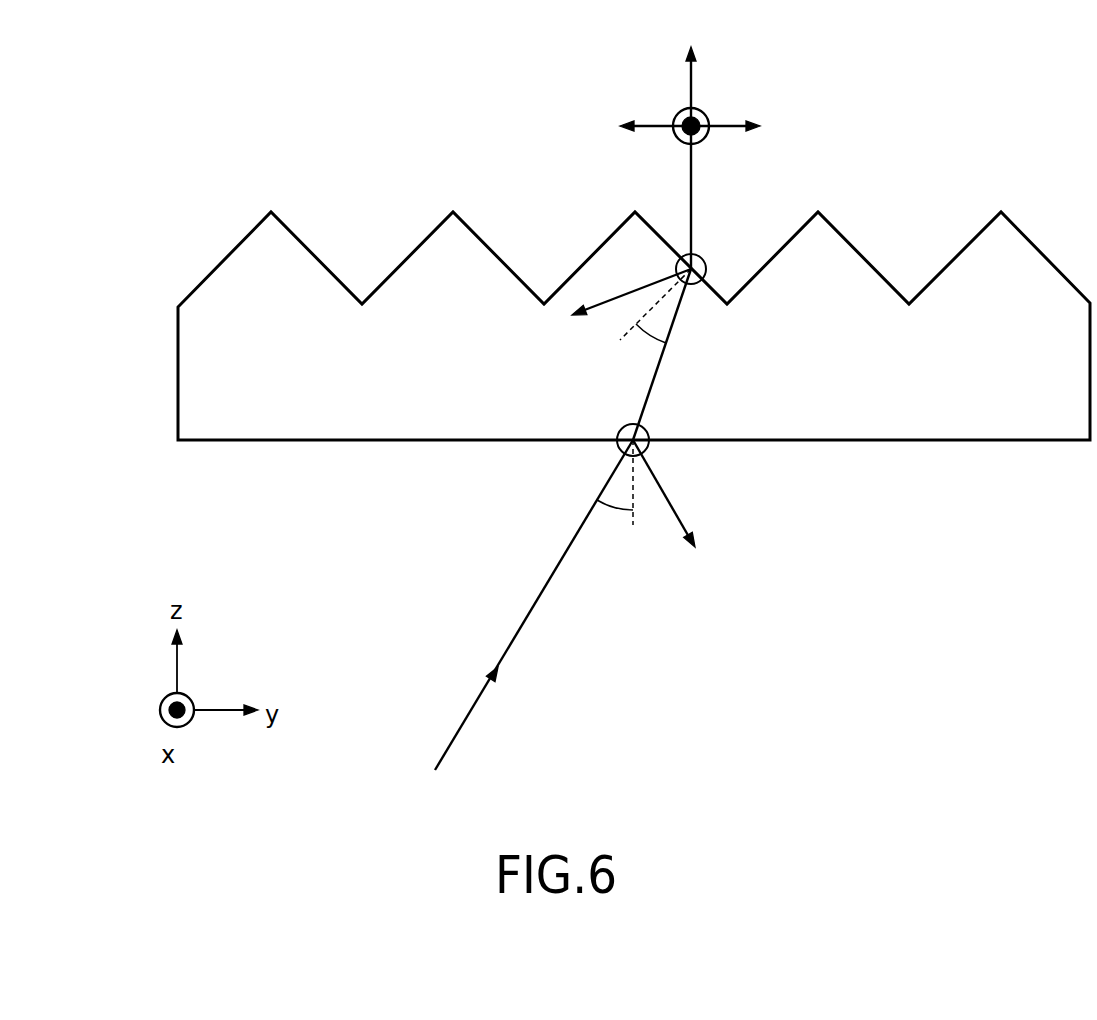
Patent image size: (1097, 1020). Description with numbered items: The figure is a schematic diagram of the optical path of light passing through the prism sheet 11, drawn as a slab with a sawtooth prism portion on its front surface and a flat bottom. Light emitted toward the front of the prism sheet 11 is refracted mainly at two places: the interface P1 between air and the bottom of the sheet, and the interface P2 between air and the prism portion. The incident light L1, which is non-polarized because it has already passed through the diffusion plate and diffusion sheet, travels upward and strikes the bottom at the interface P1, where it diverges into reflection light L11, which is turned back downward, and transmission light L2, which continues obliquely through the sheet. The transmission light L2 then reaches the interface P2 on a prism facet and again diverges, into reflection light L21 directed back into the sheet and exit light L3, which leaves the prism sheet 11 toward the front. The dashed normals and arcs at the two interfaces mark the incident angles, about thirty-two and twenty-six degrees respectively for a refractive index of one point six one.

The prism sheet 11 is at (1042, 119).
The incident light L1 is at (470, 713).
The reflection light L11 is at (673, 508).
The transmission light L2 is at (657, 373).
The reflection light L21 is at (627, 290).
The exit light L3 is at (690, 87).
The interface P1 is at (652, 431).
The interface P2 is at (707, 258).